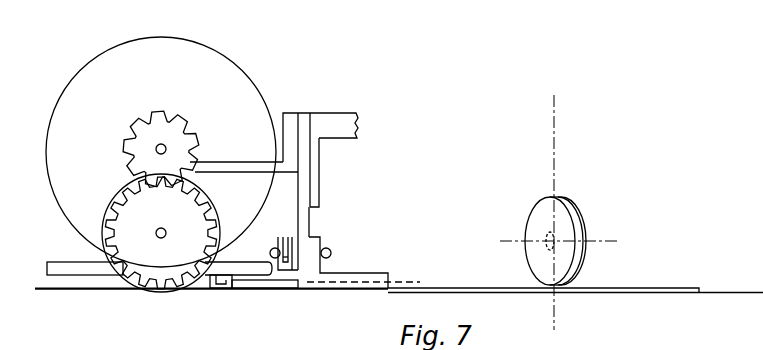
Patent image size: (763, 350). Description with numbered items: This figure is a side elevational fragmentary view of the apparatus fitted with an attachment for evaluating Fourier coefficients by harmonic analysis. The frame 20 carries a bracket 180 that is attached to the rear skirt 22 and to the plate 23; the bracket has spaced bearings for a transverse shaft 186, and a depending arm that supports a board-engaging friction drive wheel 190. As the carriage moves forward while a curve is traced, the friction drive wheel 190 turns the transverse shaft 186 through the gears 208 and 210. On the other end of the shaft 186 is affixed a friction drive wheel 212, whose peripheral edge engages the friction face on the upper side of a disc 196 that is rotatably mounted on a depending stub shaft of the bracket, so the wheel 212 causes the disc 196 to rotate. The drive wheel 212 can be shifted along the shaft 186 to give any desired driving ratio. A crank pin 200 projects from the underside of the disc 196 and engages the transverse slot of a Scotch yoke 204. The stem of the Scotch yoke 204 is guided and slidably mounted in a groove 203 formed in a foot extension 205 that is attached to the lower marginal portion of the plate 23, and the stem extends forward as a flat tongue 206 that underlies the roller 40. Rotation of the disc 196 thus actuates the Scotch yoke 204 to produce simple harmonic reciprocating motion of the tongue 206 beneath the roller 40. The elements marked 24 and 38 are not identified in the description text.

The frame 20 is at (322, 118).
The rear skirt 22 is at (315, 163).
The plate 23 is at (310, 225).
The bracket with rollers 24 is at (283, 237).
The base plate 38 is at (720, 293).
The roller 40 is at (578, 203).
The bracket 180 is at (219, 162).
The transverse shaft 186 is at (156, 149).
The friction drive wheel 190 is at (137, 283).
The disc 196 is at (70, 270).
The crank pin 200 is at (215, 287).
The groove 203 is at (330, 287).
The Scotch yoke 204 is at (260, 288).
The foot extension 205 is at (352, 277).
The flat tongue 206 is at (430, 288).
The gear 208 is at (146, 119).
The gear 210 is at (106, 241).
The friction drive wheel 212 is at (141, 38).